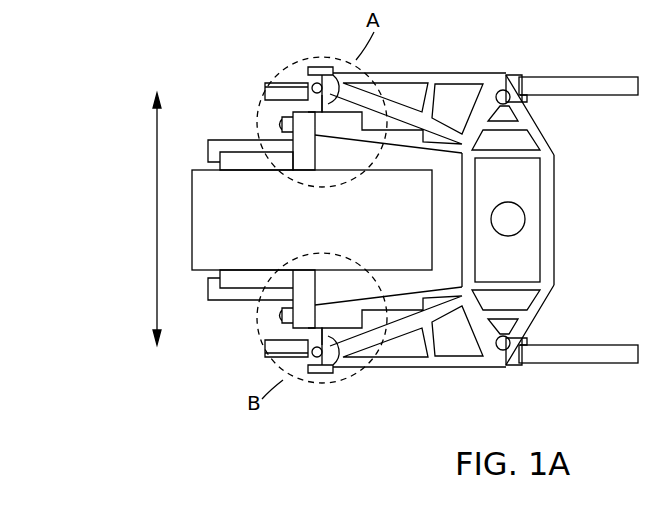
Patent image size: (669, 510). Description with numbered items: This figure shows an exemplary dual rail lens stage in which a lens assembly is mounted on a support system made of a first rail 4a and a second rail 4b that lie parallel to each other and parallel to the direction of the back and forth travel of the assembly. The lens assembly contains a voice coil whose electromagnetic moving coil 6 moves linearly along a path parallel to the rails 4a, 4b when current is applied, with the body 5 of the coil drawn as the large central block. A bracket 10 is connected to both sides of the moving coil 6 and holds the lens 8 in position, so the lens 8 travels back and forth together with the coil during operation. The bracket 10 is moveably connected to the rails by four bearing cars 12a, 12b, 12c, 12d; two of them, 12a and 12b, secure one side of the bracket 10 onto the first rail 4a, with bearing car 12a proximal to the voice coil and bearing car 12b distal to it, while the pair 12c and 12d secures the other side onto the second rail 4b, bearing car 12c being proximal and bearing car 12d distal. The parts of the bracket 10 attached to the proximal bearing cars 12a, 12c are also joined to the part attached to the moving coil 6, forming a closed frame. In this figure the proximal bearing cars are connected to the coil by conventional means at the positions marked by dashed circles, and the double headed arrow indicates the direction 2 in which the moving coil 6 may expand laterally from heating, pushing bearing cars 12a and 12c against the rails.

The direction of lateral thermal expansion 2 is at (156, 200).
The first rail 4a is at (622, 80).
The second rail 4b is at (613, 350).
The body 5 is at (213, 253).
The moving coil 6 is at (232, 158).
The lens 8 is at (510, 218).
The bracket 10 is at (554, 248).
The bearing car 12a is at (322, 67).
The bearing car 12b is at (517, 74).
The bearing car 12c is at (334, 373).
The bearing car 12d is at (525, 367).